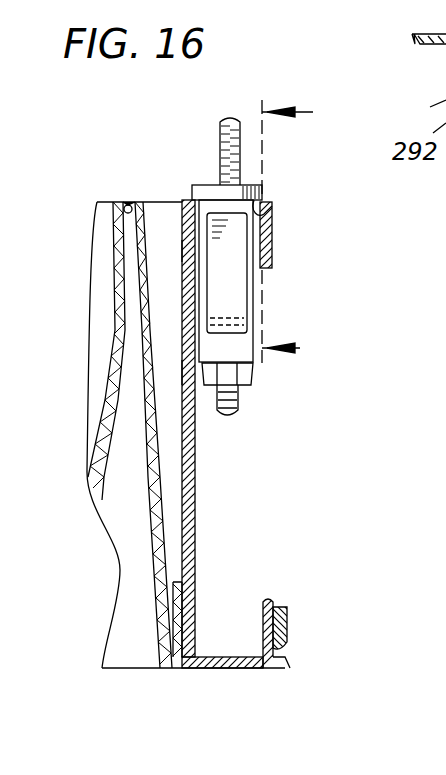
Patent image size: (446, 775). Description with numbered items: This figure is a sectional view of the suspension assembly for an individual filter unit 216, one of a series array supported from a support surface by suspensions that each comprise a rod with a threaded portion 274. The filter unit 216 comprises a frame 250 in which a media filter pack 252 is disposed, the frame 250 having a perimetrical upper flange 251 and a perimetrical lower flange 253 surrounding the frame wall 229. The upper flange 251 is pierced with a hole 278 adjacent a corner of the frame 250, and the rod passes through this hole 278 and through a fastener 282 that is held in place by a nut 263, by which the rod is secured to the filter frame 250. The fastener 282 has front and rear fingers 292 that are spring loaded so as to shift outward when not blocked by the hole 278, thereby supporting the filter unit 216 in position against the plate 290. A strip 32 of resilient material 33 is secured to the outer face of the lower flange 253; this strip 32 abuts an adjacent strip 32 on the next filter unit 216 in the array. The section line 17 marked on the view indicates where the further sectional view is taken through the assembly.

The section line 17- 17 is at (297, 231).
The strip 32 is at (290, 627).
The resilient material 33 is at (280, 650).
The filter unit 216 is at (298, 423).
The frame wall 229 is at (197, 510).
The frame 250 is at (197, 472).
The upper flange 251 is at (184, 198).
The filter pack 252 is at (143, 228).
The lower flange 253 is at (262, 606).
The nut 263 is at (193, 372).
The threaded portion 274 is at (231, 123).
The hole 278 is at (270, 222).
The fastener 282 is at (190, 250).
The plate 290 is at (266, 200).
The fingers 292 is at (233, 285).